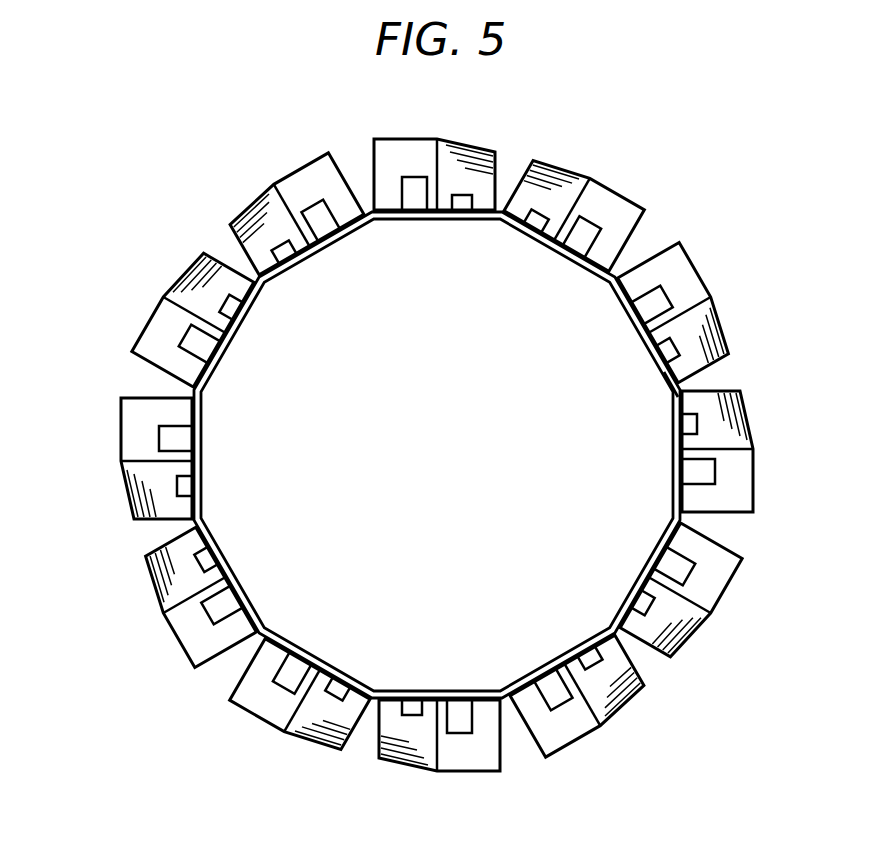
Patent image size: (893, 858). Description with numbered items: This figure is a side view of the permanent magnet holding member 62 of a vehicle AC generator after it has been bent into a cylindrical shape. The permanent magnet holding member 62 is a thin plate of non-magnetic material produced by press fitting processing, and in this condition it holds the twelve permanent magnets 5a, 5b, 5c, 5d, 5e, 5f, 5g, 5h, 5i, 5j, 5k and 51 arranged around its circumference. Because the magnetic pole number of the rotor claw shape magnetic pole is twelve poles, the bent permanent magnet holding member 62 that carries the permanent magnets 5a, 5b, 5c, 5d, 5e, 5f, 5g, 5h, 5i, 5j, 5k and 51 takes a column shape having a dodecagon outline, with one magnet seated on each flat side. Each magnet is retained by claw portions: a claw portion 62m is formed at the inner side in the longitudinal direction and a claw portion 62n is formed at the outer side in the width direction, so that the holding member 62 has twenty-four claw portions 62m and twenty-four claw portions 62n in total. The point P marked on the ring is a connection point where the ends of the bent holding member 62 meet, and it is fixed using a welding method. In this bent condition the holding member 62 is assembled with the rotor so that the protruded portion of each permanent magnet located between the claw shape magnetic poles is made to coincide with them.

The permanent magnet 5a is at (412, 134).
The permanent magnet 5b is at (583, 172).
The permanent magnet 5c is at (718, 288).
The permanent magnet 5d is at (757, 463).
The permanent magnet 5e is at (720, 592).
The permanent magnet 5f is at (590, 720).
The permanent magnet 5g is at (455, 764).
The permanent magnet 5h is at (270, 725).
The permanent magnet 5i is at (172, 624).
The permanent magnet 5j is at (118, 451).
The permanent magnet 5k is at (148, 313).
The permanent magnet 51 is at (271, 178).
The permanent magnet holding member 62 is at (540, 242).
The claw portion 62m is at (287, 250).
The claw portion 62n is at (332, 228).
The connection point P is at (662, 377).